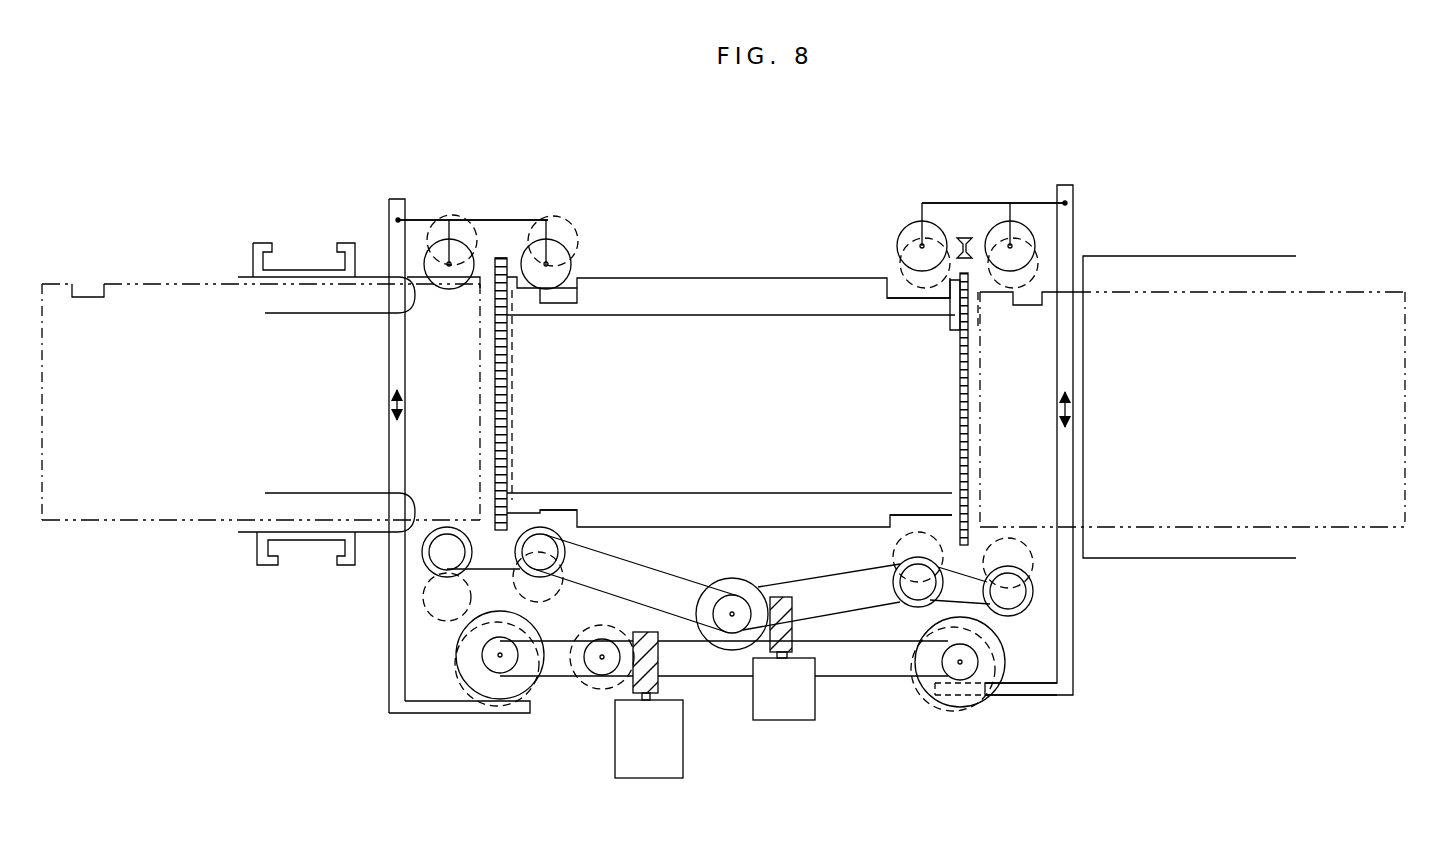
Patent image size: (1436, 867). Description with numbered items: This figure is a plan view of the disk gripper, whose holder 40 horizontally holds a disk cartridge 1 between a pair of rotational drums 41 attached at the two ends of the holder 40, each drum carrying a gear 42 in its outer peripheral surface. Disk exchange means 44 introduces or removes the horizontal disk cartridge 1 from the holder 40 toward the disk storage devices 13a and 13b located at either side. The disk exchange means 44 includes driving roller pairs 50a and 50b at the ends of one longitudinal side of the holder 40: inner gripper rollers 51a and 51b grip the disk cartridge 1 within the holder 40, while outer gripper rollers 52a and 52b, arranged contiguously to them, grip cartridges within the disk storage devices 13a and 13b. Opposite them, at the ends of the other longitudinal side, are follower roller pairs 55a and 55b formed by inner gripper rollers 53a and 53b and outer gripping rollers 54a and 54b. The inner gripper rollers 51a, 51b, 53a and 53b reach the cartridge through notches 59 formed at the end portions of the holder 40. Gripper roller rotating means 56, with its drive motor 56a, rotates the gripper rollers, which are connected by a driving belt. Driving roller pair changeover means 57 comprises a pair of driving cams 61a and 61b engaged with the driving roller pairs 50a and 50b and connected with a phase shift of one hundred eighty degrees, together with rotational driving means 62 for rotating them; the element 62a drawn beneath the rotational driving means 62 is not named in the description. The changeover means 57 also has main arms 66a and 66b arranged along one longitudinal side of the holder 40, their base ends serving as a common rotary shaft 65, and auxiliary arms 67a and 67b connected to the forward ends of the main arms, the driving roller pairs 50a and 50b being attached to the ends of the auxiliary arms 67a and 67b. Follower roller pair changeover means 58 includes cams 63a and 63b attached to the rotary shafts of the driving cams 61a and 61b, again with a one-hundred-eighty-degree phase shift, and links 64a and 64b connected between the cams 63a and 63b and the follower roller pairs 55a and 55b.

The disk cartridge 1 is at (172, 303).
The disk storage device 13a is at (255, 508).
The disk storage device 13b is at (1240, 548).
The holder 40 is at (738, 278).
The rotational drum 41 is at (513, 353).
The gear 42 is at (501, 256).
The disk exchange means 44 is at (416, 586).
The driving roller pair 50a is at (416, 614).
The driving roller pair 50b is at (1048, 609).
The inner gripper roller 51a is at (550, 596).
The inner gripper roller 51b is at (908, 603).
The outer gripper roller 52a is at (423, 557).
The outer gripper roller 52b is at (1040, 588).
The inner gripper roller 53a is at (565, 270).
The inner gripper roller 53b is at (913, 220).
The outer gripping roller 54a is at (428, 266).
The outer gripping roller 54b is at (988, 228).
The follower roller pair 55a is at (468, 206).
The follower roller pair 55b is at (968, 192).
The gripper roller rotating means 56 is at (824, 666).
The drive motor 56a is at (816, 720).
The driving roller pair changeover means 57 is at (418, 648).
The follower roller pair changeover means 58 is at (372, 680).
The notch 59 is at (577, 278).
The driving cam 61a is at (458, 656).
The driving cam 61b is at (975, 706).
The rotational driving means 62 is at (666, 683).
The drive motor 62a is at (650, 778).
The cam 63a is at (498, 699).
The cam 63b is at (1048, 655).
The link 64a is at (398, 713).
The link 64b is at (1073, 690).
The common rotary shaft 65 is at (732, 614).
The main arm 66a is at (670, 590).
The main arm 66b is at (825, 592).
The auxiliary arm 67a is at (506, 545).
The auxiliary arm 67b is at (990, 585).